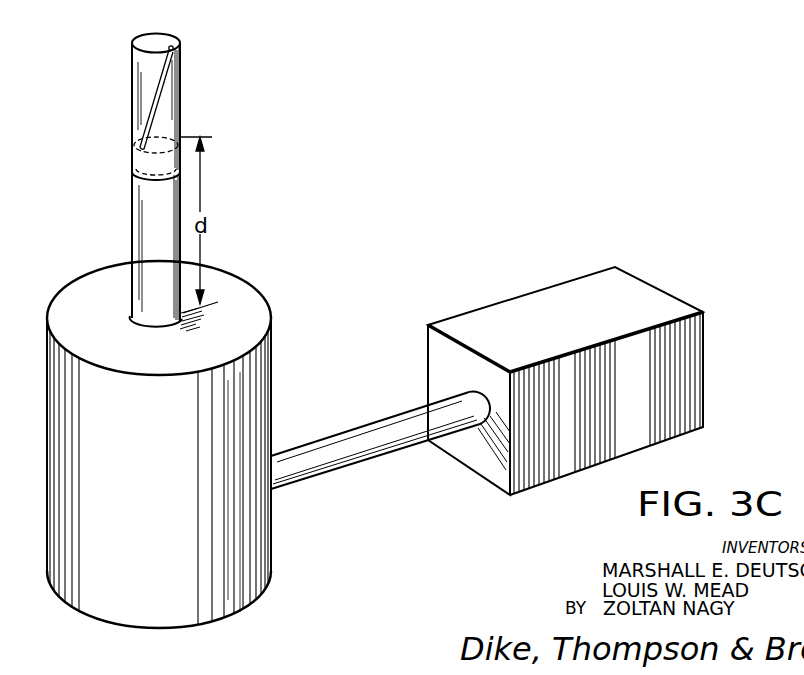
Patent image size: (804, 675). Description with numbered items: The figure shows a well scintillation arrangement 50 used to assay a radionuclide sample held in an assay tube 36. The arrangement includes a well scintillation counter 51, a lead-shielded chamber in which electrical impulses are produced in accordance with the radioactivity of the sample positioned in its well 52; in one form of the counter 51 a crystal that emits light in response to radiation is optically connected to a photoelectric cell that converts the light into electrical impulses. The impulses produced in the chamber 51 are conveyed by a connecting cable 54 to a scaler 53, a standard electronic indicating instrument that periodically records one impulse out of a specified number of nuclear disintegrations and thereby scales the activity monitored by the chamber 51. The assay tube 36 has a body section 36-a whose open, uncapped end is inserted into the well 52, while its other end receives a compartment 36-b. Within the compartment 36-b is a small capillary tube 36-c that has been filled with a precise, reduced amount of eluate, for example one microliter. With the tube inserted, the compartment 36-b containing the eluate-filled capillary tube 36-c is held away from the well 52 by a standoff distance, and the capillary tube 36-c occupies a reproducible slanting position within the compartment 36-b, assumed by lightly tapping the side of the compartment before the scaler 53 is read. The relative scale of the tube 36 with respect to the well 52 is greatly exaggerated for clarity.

The assay tube 36 is at (159, 178).
The body section 36-a is at (150, 222).
The compartment 36-b is at (141, 85).
The capillary tube 36-c is at (157, 105).
The well scintillation arrangement 50 is at (386, 444).
The well scintillation counter 51 is at (258, 528).
The well 52 is at (137, 317).
The scaler 53 is at (653, 299).
The connecting cable 54 is at (357, 435).